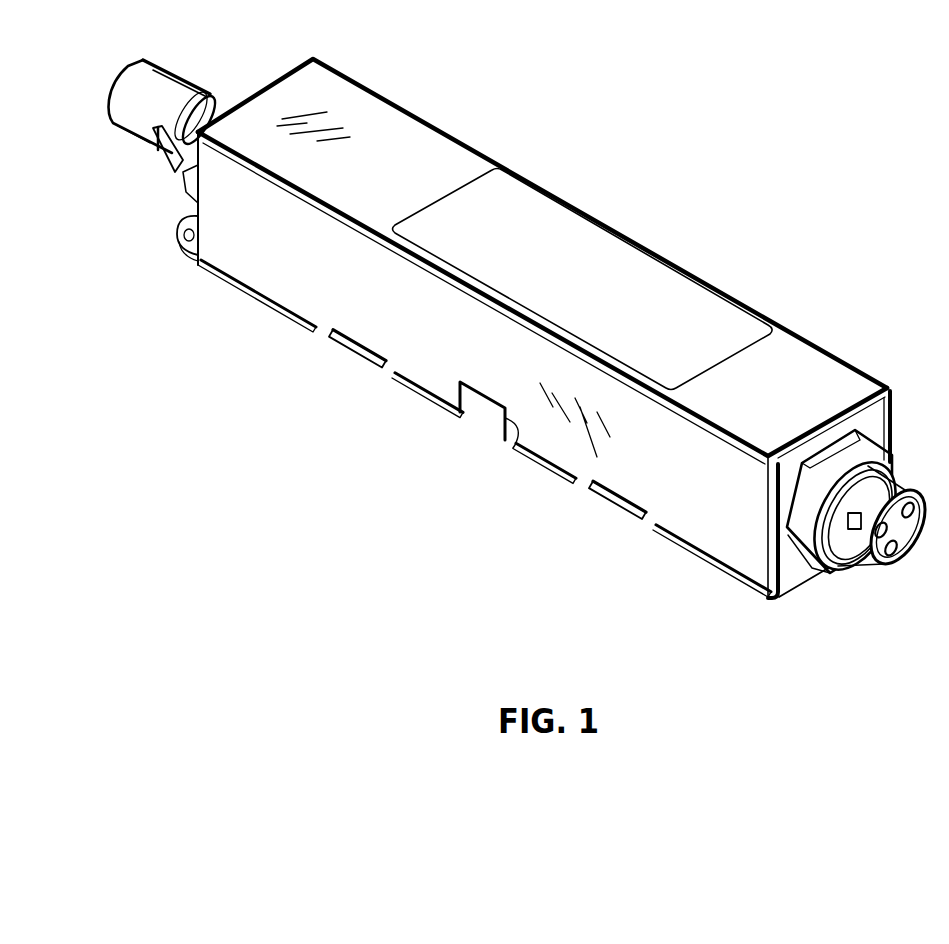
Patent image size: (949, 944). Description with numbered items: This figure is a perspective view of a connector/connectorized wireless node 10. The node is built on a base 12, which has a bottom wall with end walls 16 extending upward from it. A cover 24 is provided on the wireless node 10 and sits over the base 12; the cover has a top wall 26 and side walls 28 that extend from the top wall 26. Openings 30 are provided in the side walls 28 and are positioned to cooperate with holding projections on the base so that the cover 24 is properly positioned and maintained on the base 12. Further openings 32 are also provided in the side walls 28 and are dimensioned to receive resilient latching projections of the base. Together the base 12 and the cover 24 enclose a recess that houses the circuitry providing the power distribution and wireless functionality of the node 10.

The connector/connectorized wireless node 10 is at (523, 377).
The base 12 is at (527, 377).
The end walls 16 is at (795, 573).
The cover 24 is at (542, 261).
The top wall 26 is at (660, 298).
The side walls 28 is at (300, 282).
The openings 30 is at (380, 370).
The openings 32 is at (515, 447).